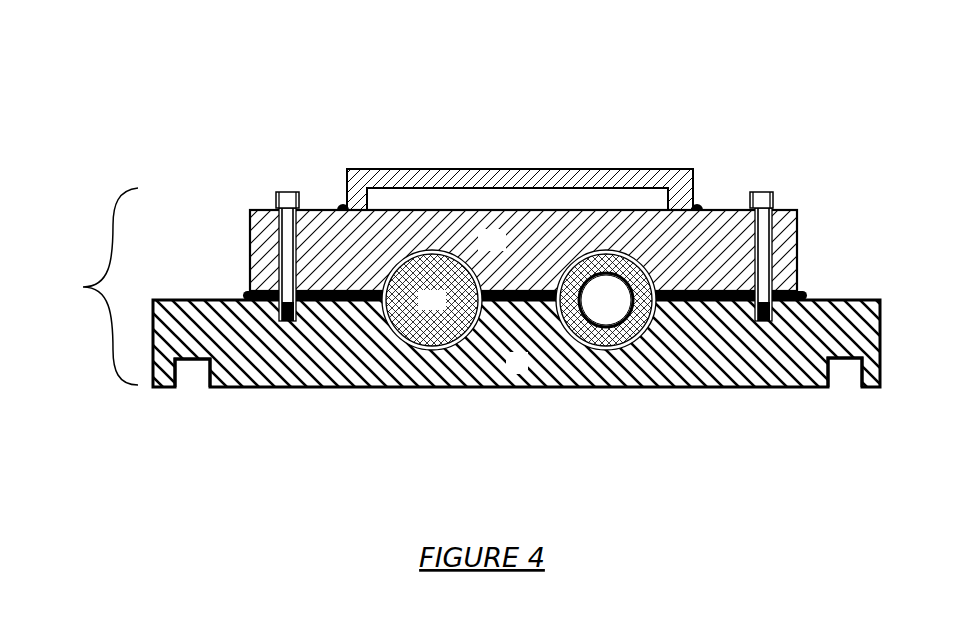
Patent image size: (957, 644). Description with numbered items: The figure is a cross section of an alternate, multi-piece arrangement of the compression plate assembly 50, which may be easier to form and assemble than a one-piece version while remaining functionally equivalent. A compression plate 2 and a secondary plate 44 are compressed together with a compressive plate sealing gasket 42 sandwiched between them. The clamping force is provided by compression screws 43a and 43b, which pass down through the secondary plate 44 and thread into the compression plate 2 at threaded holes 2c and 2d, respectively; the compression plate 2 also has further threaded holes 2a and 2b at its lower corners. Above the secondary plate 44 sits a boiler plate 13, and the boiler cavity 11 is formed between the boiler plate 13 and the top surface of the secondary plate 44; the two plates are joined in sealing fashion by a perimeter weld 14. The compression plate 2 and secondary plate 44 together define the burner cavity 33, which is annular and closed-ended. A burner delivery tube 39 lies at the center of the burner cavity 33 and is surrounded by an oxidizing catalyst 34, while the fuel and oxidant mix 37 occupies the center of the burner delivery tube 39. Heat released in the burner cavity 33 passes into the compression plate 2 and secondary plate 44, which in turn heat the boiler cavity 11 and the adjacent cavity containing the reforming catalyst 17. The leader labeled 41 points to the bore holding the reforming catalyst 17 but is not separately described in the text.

The compression plate 2 is at (515, 385).
The threaded hole 2a is at (205, 380).
The threaded hole 2b is at (858, 387).
The threaded hole 2c is at (298, 320).
The threaded hole 2d is at (748, 322).
The boiler cavity 11 is at (517, 199).
The boiler plate 13 is at (452, 170).
The perimeter weld 14 is at (333, 203).
The reforming catalyst 17 is at (432, 300).
The burner cavity 33 is at (567, 260).
The oxidizing catalyst 34 is at (568, 303).
The fuel and oxidant mix 37 is at (606, 300).
The burner delivery tube 39 is at (637, 287).
The heater bore 41 is at (392, 260).
The compressive plate sealing gasket 42 is at (238, 288).
The compression screw 43a is at (283, 183).
The compression screw 43b is at (770, 187).
The secondary plate 44 is at (523, 250).
The compression plate assembly 50 is at (78, 287).